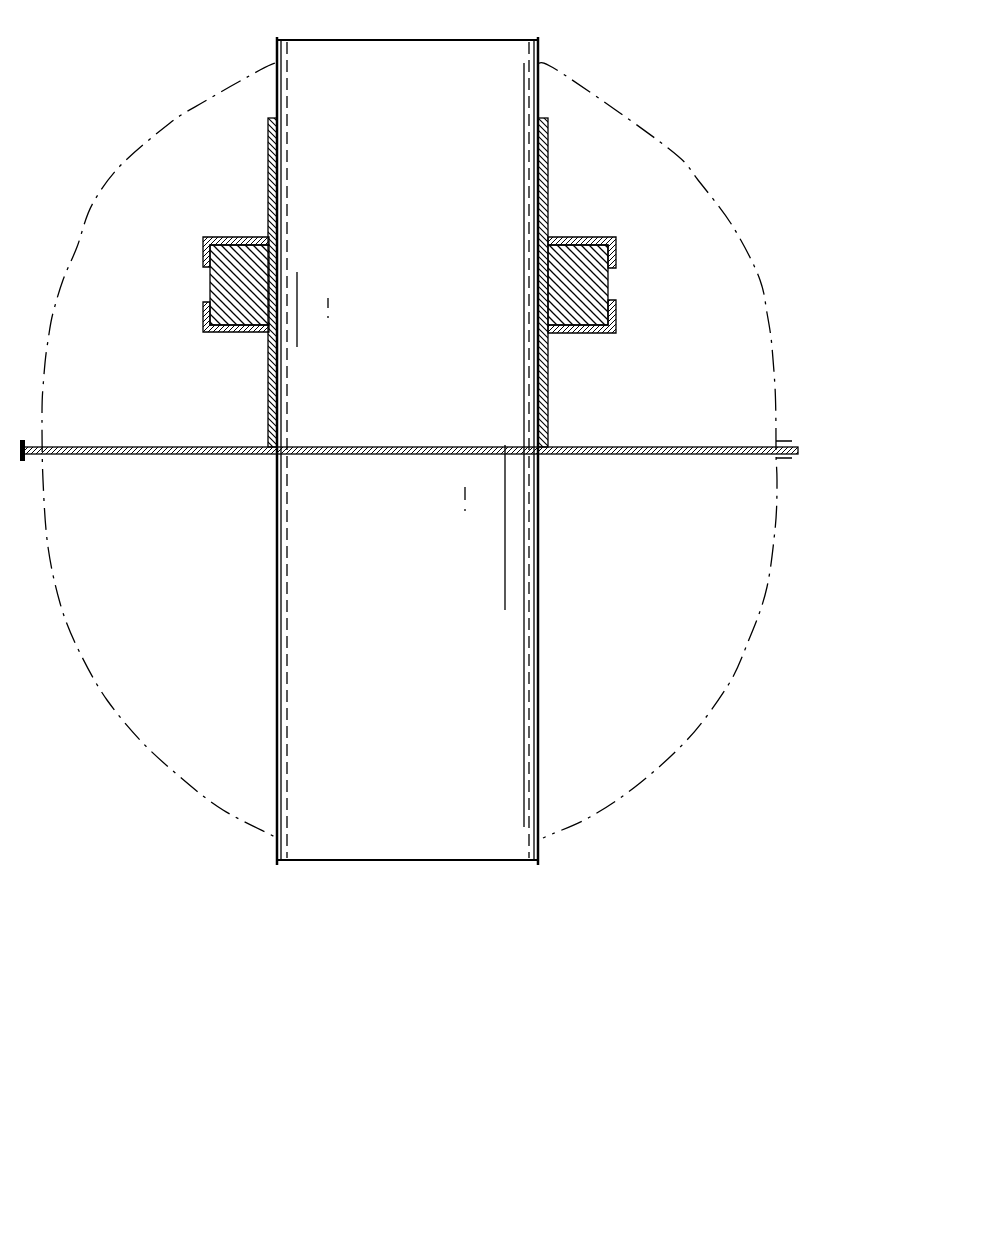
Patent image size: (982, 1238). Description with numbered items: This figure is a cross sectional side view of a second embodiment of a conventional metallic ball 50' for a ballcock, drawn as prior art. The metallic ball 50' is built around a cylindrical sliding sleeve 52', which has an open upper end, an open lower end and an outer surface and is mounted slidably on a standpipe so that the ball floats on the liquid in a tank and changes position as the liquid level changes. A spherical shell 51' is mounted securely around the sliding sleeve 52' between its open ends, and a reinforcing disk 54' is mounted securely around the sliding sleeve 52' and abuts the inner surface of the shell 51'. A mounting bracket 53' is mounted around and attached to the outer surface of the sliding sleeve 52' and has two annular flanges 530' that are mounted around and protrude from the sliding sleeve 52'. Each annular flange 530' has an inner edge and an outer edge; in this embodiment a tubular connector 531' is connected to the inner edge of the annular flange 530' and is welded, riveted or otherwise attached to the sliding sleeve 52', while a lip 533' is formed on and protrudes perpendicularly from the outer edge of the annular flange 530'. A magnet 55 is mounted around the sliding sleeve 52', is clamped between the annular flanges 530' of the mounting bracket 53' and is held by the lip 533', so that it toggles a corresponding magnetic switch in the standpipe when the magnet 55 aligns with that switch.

The metallic ball 50' is at (444, 568).
The shell 51' is at (455, 450).
The sliding sleeve 52' is at (468, 451).
The mounting bracket 53' is at (674, 267).
The annular flange 530' is at (173, 238).
The connector 531' is at (326, 259).
The lip 533' is at (180, 284).
The magnet 55 is at (233, 293).
The reinforcing disk 54' is at (409, 421).